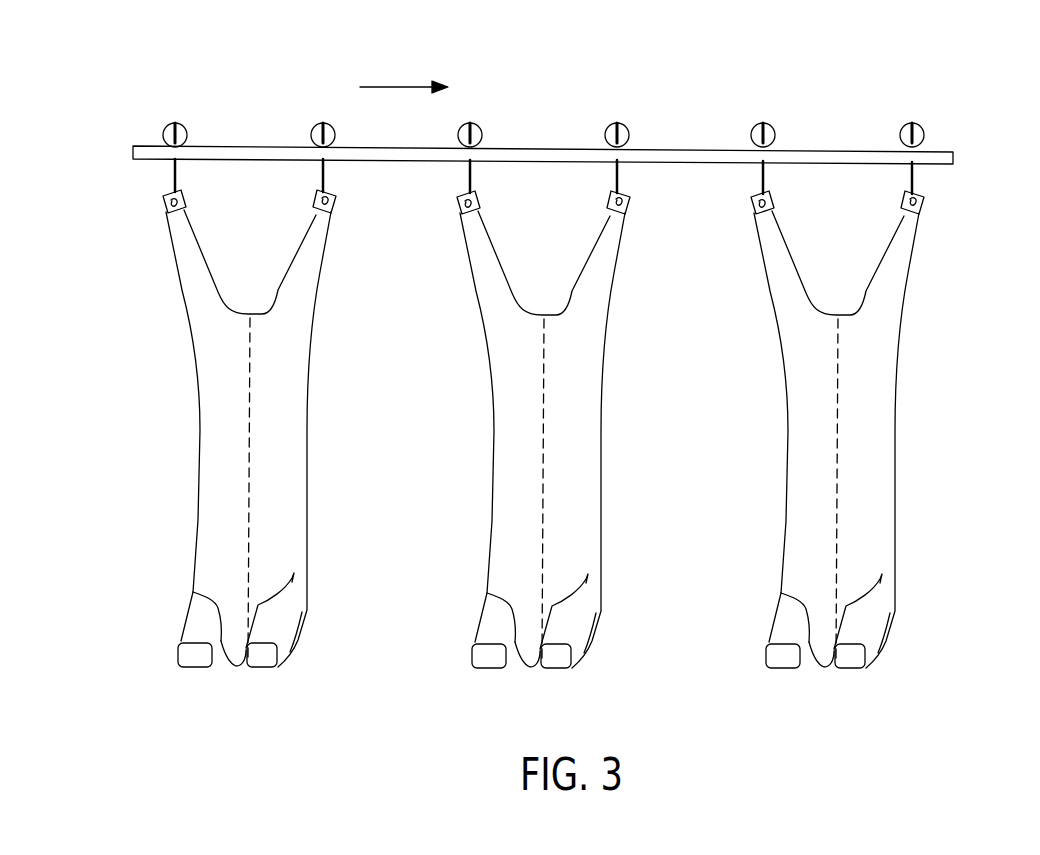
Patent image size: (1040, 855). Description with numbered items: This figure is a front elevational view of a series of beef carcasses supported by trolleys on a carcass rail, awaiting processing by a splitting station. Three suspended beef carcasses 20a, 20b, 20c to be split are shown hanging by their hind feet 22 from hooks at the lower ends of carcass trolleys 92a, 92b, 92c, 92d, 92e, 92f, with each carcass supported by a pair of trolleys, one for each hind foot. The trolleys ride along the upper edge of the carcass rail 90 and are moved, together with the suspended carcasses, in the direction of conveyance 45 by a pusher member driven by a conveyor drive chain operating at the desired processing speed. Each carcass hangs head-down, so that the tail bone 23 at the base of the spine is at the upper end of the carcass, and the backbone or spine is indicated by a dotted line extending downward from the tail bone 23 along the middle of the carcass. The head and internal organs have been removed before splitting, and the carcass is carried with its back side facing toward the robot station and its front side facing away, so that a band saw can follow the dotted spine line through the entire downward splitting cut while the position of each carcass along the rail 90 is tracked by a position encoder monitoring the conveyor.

The suspended beef carcass 20a is at (366, 668).
The suspended beef carcass 20b is at (597, 455).
The suspended beef carcass 20c is at (891, 455).
The hind feet 22 is at (181, 291).
The tail bone 23 is at (243, 314).
The direction of conveyance 45 is at (403, 85).
The carcass rail 90 is at (530, 128).
The carcass trolley 92a is at (174, 122).
The carcass trolley 92b is at (323, 122).
The carcass trolley 92c is at (470, 122).
The carcass trolley 92d is at (617, 122).
The carcass trolley 92e is at (763, 122).
The carcass trolley 92f is at (912, 122).